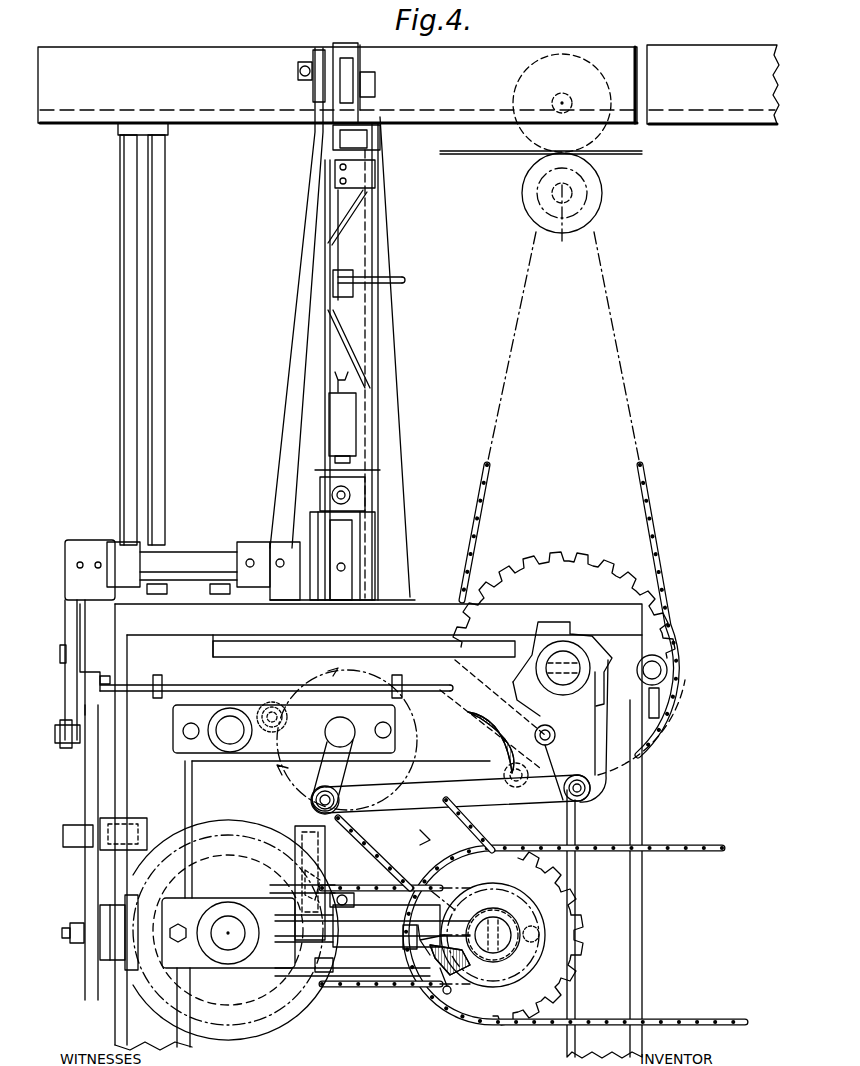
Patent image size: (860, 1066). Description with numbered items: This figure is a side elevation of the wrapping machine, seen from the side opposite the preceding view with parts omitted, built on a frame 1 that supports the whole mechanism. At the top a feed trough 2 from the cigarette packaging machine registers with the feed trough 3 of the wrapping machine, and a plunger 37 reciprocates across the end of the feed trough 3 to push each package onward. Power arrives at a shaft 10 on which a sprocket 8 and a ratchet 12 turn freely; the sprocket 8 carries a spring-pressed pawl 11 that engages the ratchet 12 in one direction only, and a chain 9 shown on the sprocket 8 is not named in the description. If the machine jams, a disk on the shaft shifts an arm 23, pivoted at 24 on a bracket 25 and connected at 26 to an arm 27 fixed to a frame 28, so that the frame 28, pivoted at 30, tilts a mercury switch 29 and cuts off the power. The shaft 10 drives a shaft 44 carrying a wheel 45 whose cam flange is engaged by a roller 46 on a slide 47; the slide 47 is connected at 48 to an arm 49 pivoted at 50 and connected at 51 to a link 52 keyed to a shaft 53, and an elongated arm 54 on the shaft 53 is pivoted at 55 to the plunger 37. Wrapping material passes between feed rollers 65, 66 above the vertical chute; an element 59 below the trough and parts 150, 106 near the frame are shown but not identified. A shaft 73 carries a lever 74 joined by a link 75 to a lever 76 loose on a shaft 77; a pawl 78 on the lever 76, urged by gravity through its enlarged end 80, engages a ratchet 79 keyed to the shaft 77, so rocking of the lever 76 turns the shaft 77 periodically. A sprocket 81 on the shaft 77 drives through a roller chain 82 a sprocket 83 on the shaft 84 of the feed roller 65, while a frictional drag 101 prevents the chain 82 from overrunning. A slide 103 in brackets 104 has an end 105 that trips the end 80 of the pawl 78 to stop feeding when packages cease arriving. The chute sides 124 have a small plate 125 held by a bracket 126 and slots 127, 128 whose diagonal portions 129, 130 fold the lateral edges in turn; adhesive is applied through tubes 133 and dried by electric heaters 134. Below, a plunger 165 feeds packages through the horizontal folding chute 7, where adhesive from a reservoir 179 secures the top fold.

The frame 1 is at (622, 808).
The feed trough 2 is at (732, 53).
The feed trough 3 is at (607, 52).
The folding chute 7 is at (373, 531).
The sprocket 8 is at (576, 925).
The chain 9 is at (688, 845).
The shaft 10 is at (504, 940).
The pawl 11 is at (456, 976).
The ratchet 12 is at (486, 980).
The arm 23 is at (378, 945).
The pivot 24 is at (405, 950).
The bracket 25 is at (366, 977).
The pivotal connection 26 is at (345, 894).
The arm 27 is at (322, 974).
The frame 28 is at (296, 838).
The mercury switch 29 is at (330, 872).
The pivotal mounting 30 is at (296, 885).
The plunger 37 is at (364, 52).
The shaft 44 is at (228, 945).
The wheel 45 is at (262, 1034).
The follower roller 46 is at (152, 1000).
The slide 47 is at (108, 962).
The pivotal connection 48 is at (70, 934).
The arm 49 is at (84, 880).
The pivot 50 is at (63, 833).
The pivotal connection 51 is at (56, 736).
The link 52 is at (66, 612).
The shaft 53 is at (193, 555).
The elongated arm 54 is at (303, 344).
The pivot 55 is at (300, 65).
The guide rail 59 is at (490, 148).
The feed roller 65 is at (603, 193).
The feed roller 66 is at (603, 130).
The shaft 73 is at (330, 724).
The lever 74 is at (318, 797).
The link 75 is at (507, 800).
The lever 76 is at (584, 753).
The shaft 77 is at (568, 660).
The pawl 78 is at (546, 748).
The ratchet 79 is at (548, 626).
The enlarged end of pawl 80 is at (478, 736).
The sprocket 81 is at (624, 568).
The roller chain 82 is at (652, 492).
The sprocket 83 is at (586, 212).
The shaft 84 is at (562, 240).
The frictional drag 101 is at (661, 670).
The slide 103 is at (143, 692).
The brackets 104 is at (157, 675).
The trip end of slide 105 is at (445, 655).
The bracket 106 is at (93, 668).
The sides of folding chute 124 is at (352, 318).
The small plate 125 is at (336, 194).
The bracket 126 is at (360, 173).
The slot 127 is at (323, 206).
The slot 128 is at (368, 193).
The diagonal slot portion 129 is at (350, 220).
The diagonal slot portion 130 is at (352, 352).
The tubes 133 is at (335, 279).
The electric heaters 134 is at (346, 421).
The roller 150 is at (230, 710).
The plunger 165 is at (348, 556).
The reservoir 179 is at (352, 494).